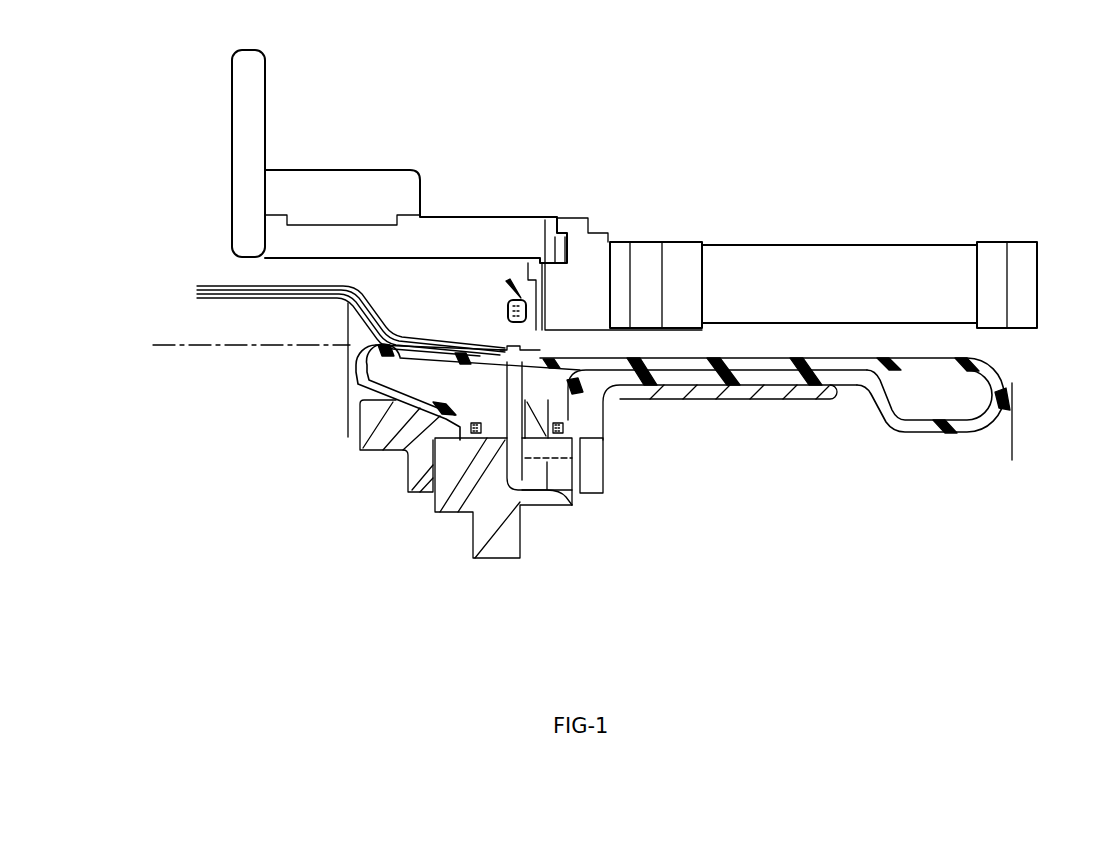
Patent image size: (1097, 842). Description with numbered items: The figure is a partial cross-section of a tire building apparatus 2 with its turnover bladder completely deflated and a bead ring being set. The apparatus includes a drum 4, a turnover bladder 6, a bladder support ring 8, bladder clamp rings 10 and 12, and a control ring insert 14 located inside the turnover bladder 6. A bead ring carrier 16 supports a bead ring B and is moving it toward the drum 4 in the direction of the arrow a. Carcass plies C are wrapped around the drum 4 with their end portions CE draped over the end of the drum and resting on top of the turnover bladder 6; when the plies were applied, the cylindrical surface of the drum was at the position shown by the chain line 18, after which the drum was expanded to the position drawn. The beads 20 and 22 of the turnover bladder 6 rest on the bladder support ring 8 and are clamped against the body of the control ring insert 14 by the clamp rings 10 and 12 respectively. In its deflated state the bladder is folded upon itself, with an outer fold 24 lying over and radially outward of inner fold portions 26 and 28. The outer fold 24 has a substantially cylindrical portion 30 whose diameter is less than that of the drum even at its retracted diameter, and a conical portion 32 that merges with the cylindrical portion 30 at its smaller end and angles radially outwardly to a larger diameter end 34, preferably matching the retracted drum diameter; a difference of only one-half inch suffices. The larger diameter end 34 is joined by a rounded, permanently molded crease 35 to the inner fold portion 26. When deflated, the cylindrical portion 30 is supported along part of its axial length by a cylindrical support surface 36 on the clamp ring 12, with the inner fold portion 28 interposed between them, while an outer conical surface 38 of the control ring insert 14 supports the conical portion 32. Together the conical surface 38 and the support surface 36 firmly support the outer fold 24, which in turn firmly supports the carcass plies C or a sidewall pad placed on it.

The tire building apparatus 2 is at (686, 456).
The drum 4 is at (237, 308).
The turnover bladder 6 is at (1021, 395).
The bladder support ring 8 is at (462, 500).
The bladder clamp ring 10 is at (388, 440).
The bladder clamp ring 12 is at (603, 452).
The control ring insert 14 is at (582, 355).
The bead ring carrier 16 is at (679, 242).
The chain line 18 is at (218, 348).
The bead 20 is at (480, 436).
The bead 22 is at (565, 428).
The outer fold 24 is at (848, 358).
The inner fold portion 26 is at (400, 397).
The inner fold portion 28 is at (708, 377).
The cylindrical portion 30 is at (716, 360).
The conical portion 32 is at (428, 357).
The larger diameter end 34 is at (365, 348).
The crease 35 is at (352, 370).
The cylindrical support surface 36 is at (780, 380).
The outer conical surface 38 is at (510, 368).
The bead ring B is at (505, 310).
The carcass plies C is at (220, 288).
The end portions CE is at (403, 337).
The arrow a is at (383, 272).